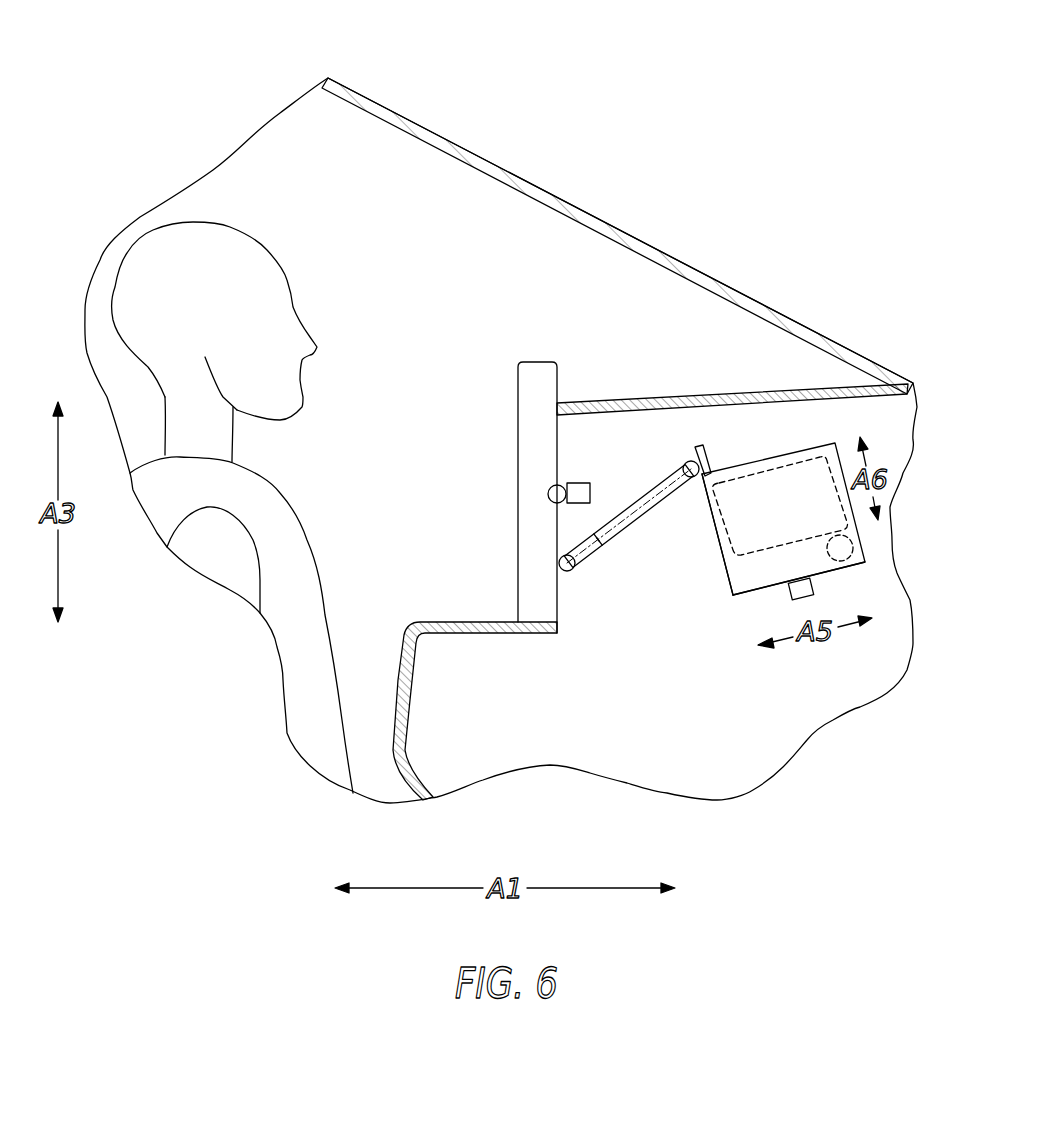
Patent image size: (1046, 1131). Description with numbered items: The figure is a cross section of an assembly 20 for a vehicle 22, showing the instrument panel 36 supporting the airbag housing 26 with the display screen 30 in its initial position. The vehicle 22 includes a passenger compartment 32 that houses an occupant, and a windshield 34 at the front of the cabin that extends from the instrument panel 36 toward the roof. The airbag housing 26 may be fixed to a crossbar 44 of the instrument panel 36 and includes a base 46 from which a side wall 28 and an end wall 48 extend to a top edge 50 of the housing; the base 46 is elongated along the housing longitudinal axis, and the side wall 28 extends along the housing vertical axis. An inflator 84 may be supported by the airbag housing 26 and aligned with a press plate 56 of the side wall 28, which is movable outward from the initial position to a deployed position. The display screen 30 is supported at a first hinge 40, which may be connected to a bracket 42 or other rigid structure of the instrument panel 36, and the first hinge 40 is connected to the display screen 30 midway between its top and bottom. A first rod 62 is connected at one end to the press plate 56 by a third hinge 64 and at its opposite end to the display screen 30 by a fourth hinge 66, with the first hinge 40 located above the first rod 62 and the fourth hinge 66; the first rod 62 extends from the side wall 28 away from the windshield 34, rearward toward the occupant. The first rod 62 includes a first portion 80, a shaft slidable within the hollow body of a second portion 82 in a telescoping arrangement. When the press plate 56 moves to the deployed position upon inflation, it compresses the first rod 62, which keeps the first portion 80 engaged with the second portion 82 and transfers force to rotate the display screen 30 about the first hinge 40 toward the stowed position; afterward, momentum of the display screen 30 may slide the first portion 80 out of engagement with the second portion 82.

The assembly 20 is at (848, 657).
The vehicle 22 is at (490, 111).
The airbag housing 26 is at (778, 457).
The side wall 28 is at (710, 502).
The display screen 30 is at (517, 441).
The passenger compartment 32 is at (440, 236).
The windshield 34 is at (632, 226).
The instrument panel 36 is at (452, 620).
The first hinge 40 is at (548, 494).
The bracket 42 is at (578, 483).
The crossbar 44 is at (790, 594).
The base 46 is at (850, 569).
The end wall 48 is at (743, 575).
The top edge 50 is at (752, 463).
The press plate 56 is at (708, 448).
The first rod 62 is at (633, 527).
The third hinge 64 is at (691, 461).
The fourth hinge 66 is at (568, 573).
The first portion 80 is at (640, 507).
The second portion 82 is at (584, 550).
The inflator 84 is at (863, 553).